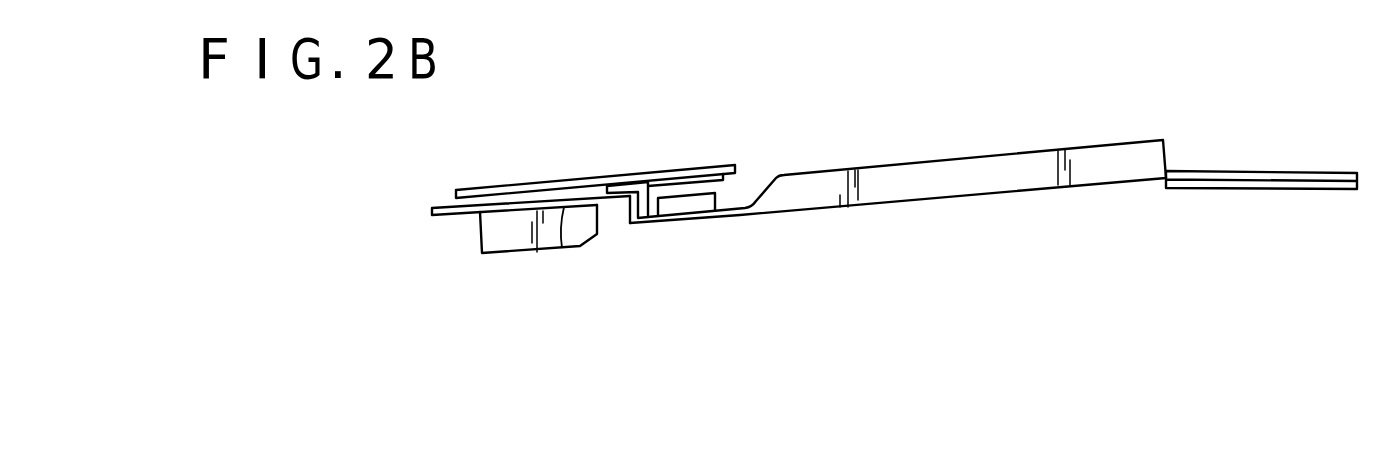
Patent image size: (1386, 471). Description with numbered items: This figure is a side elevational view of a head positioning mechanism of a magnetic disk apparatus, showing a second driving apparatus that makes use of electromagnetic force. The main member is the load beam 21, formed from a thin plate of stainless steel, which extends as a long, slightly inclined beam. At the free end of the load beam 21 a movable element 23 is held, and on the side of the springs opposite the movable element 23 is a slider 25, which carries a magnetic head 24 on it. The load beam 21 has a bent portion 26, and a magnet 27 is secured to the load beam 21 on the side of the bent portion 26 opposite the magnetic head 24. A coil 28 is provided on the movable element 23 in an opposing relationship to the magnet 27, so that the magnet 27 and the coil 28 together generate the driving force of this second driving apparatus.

The load beam 21 is at (990, 162).
The movable element 23 is at (518, 190).
The magnetic head 24 is at (503, 250).
The slider 25 is at (562, 248).
The bent portion 26 is at (628, 218).
The magnet 27 is at (697, 209).
The coil 28 is at (648, 200).